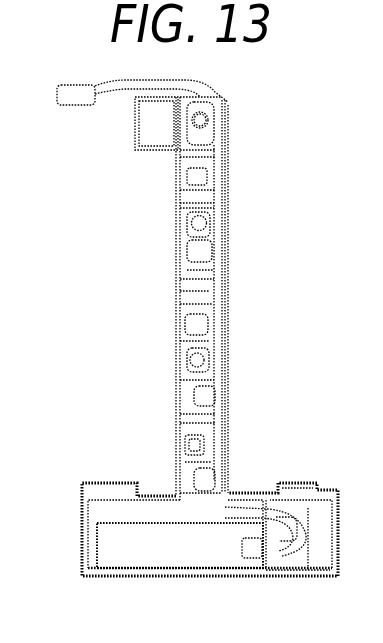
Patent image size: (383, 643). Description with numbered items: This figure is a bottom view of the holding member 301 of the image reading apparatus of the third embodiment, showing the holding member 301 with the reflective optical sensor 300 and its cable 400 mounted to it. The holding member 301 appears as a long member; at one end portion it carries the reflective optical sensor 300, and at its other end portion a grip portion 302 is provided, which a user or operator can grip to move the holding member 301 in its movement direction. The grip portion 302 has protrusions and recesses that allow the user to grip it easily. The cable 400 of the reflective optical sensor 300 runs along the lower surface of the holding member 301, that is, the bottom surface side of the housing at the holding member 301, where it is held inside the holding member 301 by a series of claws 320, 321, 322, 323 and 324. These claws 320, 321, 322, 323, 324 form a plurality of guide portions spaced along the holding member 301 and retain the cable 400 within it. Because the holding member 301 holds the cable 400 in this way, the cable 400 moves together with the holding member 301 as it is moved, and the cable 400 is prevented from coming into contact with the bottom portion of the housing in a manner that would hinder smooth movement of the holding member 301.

The reflective optical sensor 300 is at (178, 552).
The holding member 301 is at (178, 272).
The grip portion 302 is at (148, 118).
The claw 320 is at (208, 175).
The claw 321 is at (207, 262).
The claw 322 is at (210, 327).
The claw 323 is at (208, 398).
The claw 324 is at (212, 478).
The cable 400 is at (185, 83).